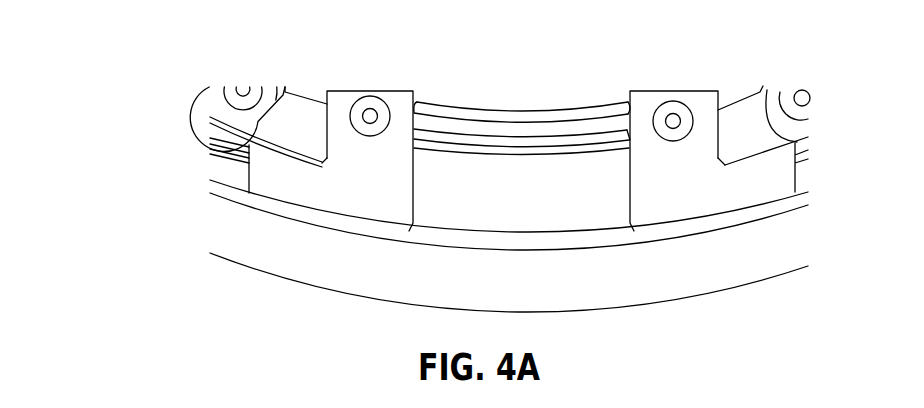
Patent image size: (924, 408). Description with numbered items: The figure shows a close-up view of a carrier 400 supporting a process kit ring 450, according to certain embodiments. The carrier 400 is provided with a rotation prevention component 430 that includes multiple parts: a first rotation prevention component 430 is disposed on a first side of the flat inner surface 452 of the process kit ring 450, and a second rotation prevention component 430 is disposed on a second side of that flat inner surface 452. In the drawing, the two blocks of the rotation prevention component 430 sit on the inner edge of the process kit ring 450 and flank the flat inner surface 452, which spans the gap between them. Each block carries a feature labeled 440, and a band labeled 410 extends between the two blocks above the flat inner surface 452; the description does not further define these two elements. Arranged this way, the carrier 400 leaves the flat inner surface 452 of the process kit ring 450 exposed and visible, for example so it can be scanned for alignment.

The carrier 400 is at (189, 96).
The belt 410 is at (484, 125).
The rotation prevention component 430 is at (383, 202).
The roller 440 is at (353, 100).
The process kit ring 450 is at (555, 285).
The flat inner surface 452 is at (506, 226).